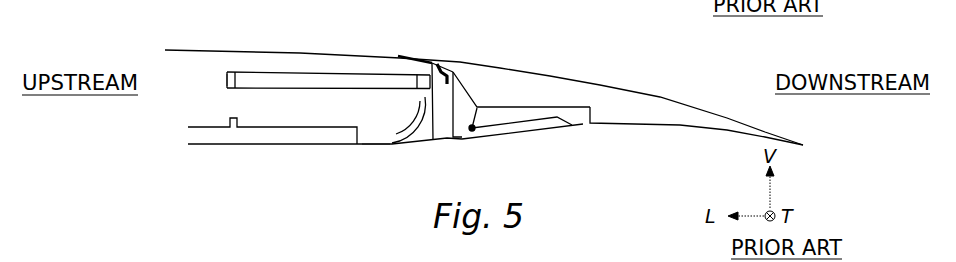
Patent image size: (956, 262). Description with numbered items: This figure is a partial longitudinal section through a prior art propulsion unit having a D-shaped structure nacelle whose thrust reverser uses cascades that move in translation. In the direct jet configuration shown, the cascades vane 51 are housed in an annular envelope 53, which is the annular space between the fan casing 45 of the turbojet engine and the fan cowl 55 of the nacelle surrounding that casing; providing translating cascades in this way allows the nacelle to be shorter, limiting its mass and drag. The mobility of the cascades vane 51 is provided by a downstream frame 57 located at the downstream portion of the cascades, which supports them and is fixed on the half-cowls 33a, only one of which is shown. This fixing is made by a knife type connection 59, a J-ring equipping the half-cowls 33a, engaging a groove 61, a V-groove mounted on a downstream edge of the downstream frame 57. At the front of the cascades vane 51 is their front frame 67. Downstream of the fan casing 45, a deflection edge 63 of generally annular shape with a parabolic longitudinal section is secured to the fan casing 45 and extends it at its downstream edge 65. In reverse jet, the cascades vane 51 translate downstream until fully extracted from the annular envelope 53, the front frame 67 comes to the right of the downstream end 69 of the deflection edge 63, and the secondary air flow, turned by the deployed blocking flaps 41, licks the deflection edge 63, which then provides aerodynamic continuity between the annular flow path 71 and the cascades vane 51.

The half-cowl 33a is at (573, 75).
The blocking flap 41 is at (562, 123).
The fan casing 45 is at (280, 146).
The cascades vane 51 is at (355, 68).
The annular envelope 53 is at (222, 82).
The fan cowl 55 is at (281, 52).
The downstream frame 57 is at (434, 128).
The knife type connection 59 is at (443, 80).
The groove 61 is at (452, 132).
The deflection edge 63 is at (383, 142).
The downstream edge of the fan casing 65 is at (352, 146).
The front frame 67 is at (232, 72).
The downstream end of the deflection edge 69 is at (421, 127).
The annular flow path 71 is at (384, 160).